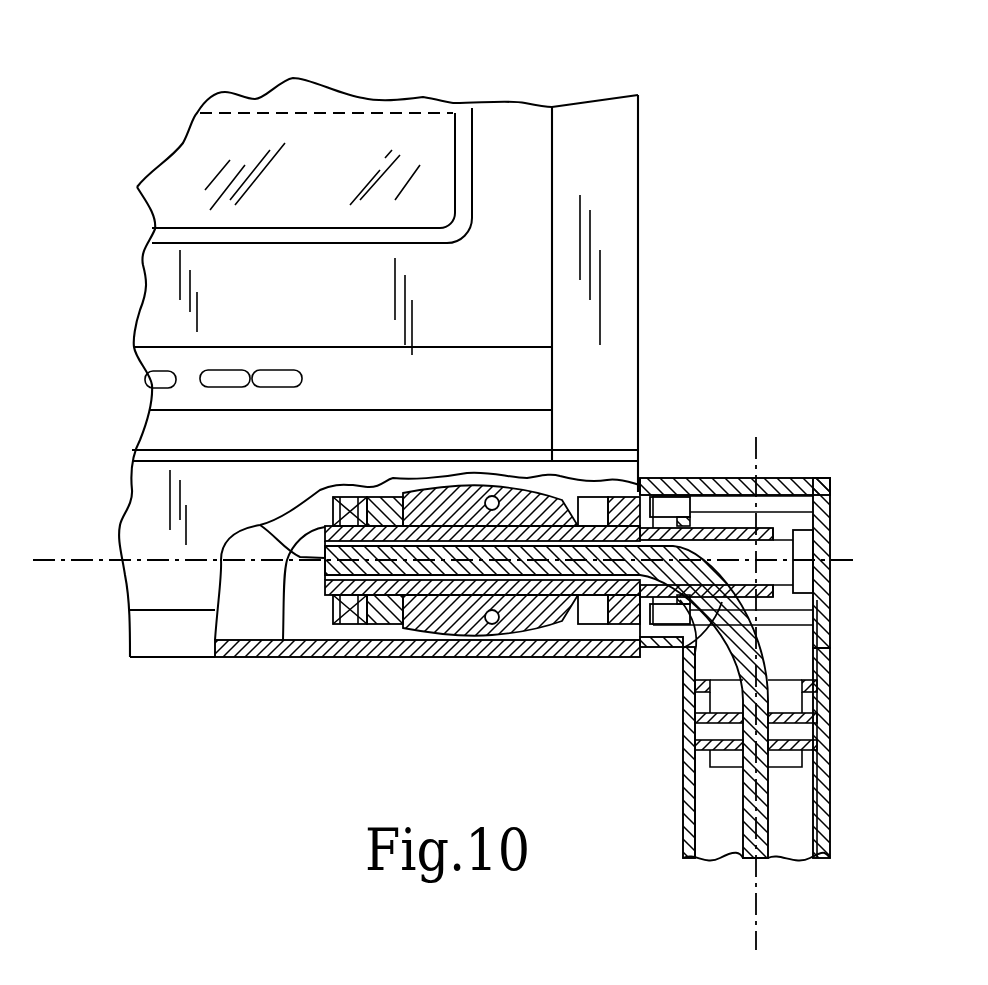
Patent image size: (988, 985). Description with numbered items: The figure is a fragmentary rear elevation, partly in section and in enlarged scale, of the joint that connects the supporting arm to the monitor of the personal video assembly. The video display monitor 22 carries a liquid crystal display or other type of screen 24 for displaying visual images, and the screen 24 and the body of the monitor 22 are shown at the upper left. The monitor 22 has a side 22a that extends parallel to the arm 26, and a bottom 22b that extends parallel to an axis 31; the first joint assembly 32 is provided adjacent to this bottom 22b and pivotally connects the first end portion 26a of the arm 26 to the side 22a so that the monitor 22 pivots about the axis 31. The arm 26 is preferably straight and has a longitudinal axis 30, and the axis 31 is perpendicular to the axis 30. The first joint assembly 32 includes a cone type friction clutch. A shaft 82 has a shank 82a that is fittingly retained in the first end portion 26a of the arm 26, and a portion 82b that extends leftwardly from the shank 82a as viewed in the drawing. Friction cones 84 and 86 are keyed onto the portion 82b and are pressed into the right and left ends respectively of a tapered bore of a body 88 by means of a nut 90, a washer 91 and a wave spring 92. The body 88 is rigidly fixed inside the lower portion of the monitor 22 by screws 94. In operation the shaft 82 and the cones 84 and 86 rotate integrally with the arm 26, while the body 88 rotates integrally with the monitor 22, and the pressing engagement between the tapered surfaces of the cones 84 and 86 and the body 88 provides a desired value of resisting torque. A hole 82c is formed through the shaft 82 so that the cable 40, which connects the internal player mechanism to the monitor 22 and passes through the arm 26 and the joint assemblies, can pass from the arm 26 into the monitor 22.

The video display monitor 22 is at (517, 103).
The side of the monitor 22a is at (638, 223).
The bottom of the monitor 22b is at (170, 657).
The screen 24 is at (377, 150).
The arm 26 is at (683, 822).
The first end portion of the arm 26a is at (815, 457).
The longitudinal axis 30 is at (756, 933).
The axis 31 is at (68, 557).
The first joint assembly 32 is at (493, 698).
The cable 40 is at (280, 656).
The shaft 82 is at (688, 413).
The shank 82a is at (725, 525).
The portion of the shaft 82b is at (590, 497).
The hole 82c is at (397, 508).
The friction cone 84 is at (530, 498).
The friction cone 86 is at (432, 500).
The body 88 is at (453, 630).
The nut 90 is at (343, 624).
The washer 91 is at (368, 624).
The wave spring 92 is at (630, 493).
The screws 94 is at (489, 496).